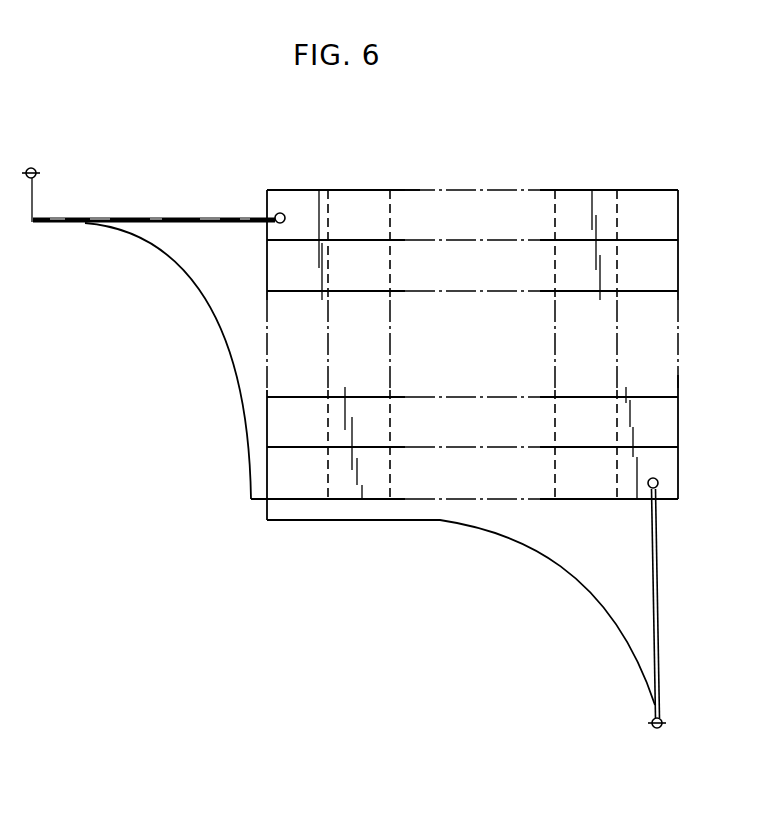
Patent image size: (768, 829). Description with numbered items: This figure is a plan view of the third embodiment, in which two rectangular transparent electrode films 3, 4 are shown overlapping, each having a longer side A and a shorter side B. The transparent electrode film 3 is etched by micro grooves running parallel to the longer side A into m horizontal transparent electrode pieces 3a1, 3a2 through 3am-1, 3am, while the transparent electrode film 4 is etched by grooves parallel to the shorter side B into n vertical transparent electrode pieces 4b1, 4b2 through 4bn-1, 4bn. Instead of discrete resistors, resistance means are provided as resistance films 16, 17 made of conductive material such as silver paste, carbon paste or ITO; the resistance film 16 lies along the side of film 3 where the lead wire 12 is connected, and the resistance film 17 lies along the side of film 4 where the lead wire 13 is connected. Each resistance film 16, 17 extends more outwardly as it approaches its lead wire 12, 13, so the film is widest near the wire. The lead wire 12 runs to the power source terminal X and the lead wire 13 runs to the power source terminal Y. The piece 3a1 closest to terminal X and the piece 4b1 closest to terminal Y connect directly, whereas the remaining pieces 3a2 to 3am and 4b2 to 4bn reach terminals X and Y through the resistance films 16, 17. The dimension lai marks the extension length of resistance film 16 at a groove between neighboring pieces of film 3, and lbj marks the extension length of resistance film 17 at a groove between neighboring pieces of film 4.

The transparent electrode film 3 is at (509, 344).
The transparent electrode piece 3a1 is at (678, 213).
The transparent electrode piece 3a2 is at (678, 262).
The transparent electrode piece 3am-1 is at (680, 423).
The transparent electrode piece 3am is at (490, 480).
The transparent electrode film 4 is at (473, 318).
The transparent electrode piece 4bn is at (300, 200).
The transparent electrode piece 4bn-1 is at (360, 202).
The transparent electrode piece 4b2 is at (578, 200).
The transparent electrode piece 4b1 is at (647, 327).
The longer side A is at (400, 190).
The shorter side B is at (678, 386).
The lead wire 12 is at (132, 217).
The lead wire 13 is at (660, 592).
The resistance film 16 is at (226, 336).
The resistance film 17 is at (490, 538).
The power source terminal X is at (36, 170).
The power source terminal Y is at (663, 719).
The extension length lai is at (264, 241).
The extension length lbj is at (622, 632).